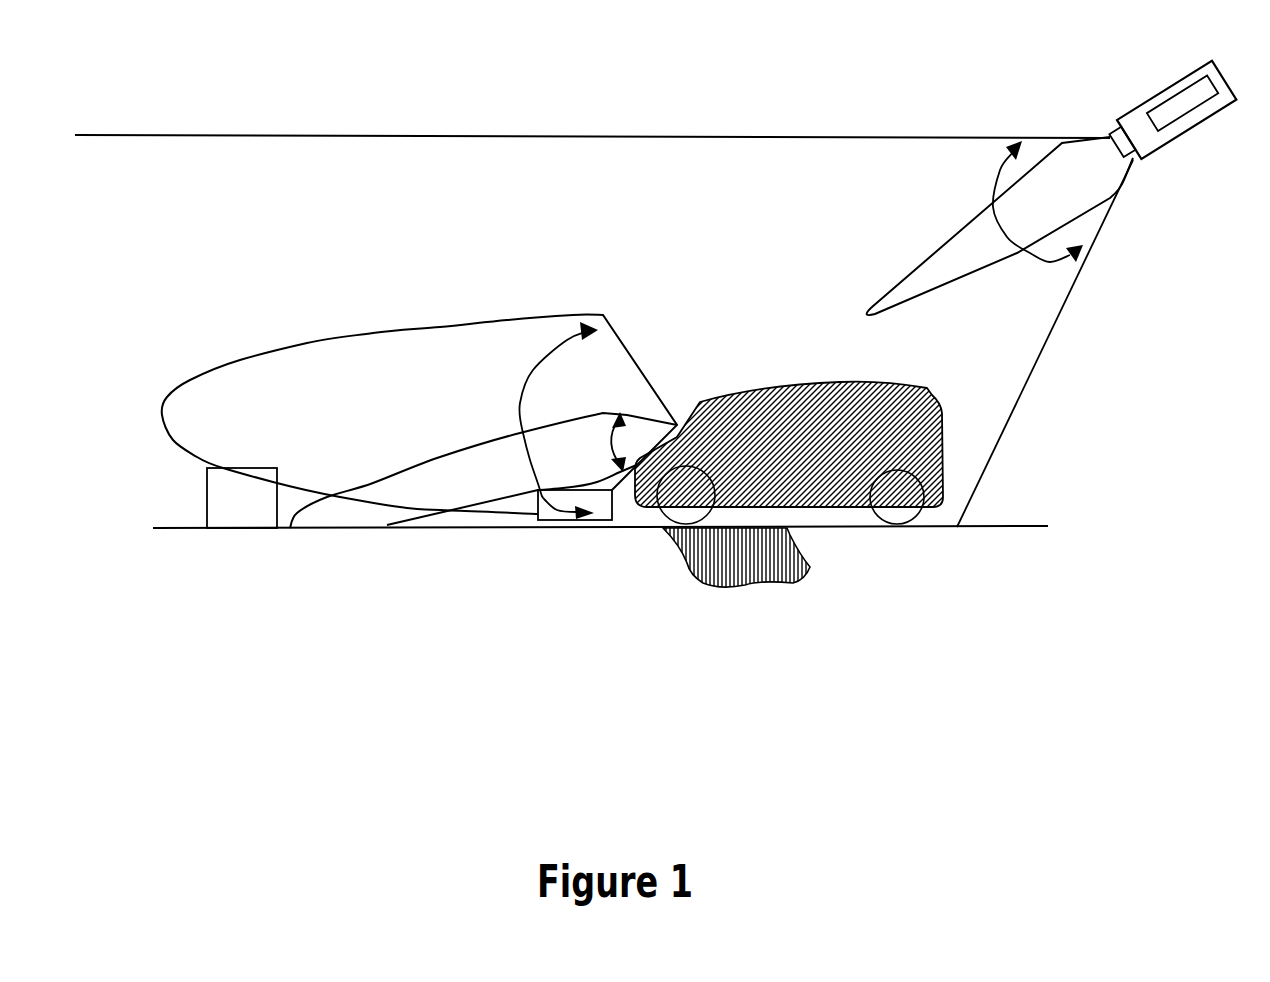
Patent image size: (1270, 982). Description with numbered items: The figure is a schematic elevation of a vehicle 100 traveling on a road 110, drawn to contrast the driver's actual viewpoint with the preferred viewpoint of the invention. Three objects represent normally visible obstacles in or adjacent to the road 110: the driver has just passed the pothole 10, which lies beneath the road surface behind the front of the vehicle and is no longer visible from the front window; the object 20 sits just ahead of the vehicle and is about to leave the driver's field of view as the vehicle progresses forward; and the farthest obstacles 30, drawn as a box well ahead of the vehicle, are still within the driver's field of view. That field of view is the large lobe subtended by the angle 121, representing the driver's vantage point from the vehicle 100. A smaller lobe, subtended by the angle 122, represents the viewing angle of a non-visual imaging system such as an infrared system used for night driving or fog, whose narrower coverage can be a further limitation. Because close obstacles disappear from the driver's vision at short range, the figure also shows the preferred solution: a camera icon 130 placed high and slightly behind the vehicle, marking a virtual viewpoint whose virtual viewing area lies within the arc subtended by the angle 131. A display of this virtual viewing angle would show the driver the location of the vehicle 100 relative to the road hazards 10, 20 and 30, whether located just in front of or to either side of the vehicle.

The pothole 10 is at (760, 590).
The object 20 is at (575, 533).
The farthest obstacles 30 is at (247, 538).
The vehicle 100 is at (845, 505).
The road 110 is at (437, 537).
The angle 121 is at (419, 417).
The viewing angle of imaging system 122 is at (483, 470).
The camera icon 130 is at (1090, 127).
The angle 131 is at (1000, 226).